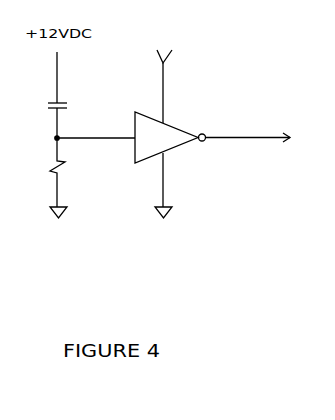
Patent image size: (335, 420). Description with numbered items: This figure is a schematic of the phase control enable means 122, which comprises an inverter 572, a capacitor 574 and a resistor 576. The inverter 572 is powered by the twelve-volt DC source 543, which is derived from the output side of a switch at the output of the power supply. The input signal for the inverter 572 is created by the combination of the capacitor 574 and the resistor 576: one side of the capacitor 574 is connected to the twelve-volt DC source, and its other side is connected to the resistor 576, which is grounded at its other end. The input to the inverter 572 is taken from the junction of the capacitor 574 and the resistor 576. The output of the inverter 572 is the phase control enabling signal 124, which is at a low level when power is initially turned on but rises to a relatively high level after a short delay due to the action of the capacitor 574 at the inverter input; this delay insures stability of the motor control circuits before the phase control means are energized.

The capacitor 574 is at (39, 110).
The resistor 576 is at (41, 178).
The +12 VDC source 543 is at (166, 76).
The inverter 572 is at (172, 148).
The phase control enable means 122 is at (190, 86).
The phase control enabling signal 124 is at (265, 135).